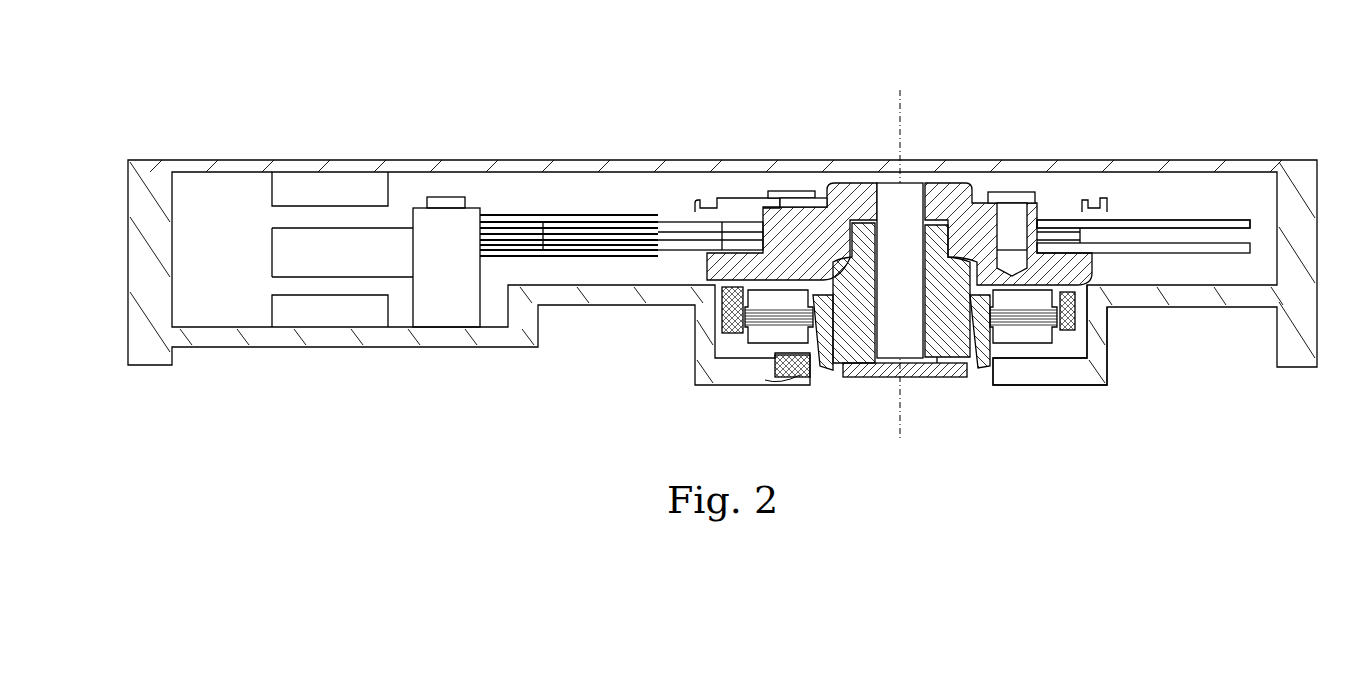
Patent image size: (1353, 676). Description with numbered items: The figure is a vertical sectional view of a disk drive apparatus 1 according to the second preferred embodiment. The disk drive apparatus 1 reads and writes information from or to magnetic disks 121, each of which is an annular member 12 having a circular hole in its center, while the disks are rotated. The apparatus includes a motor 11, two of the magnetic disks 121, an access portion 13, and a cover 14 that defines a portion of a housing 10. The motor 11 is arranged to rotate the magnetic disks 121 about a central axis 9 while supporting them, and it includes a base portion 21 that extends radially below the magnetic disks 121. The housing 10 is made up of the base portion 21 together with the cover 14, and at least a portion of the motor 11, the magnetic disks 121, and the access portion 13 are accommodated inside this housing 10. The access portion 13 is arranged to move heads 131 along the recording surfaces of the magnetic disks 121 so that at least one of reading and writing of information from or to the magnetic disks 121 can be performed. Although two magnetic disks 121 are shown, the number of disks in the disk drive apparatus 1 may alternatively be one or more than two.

The disk drive apparatus 1 is at (647, 128).
The central axis 9 is at (897, 128).
The housing 10 is at (235, 150).
The motor 11 is at (822, 190).
The annular member 12 is at (1178, 222).
The magnetic disk 121 is at (1143, 224).
The access portion 13 is at (507, 211).
The head 131 is at (610, 222).
The cover 14 is at (408, 165).
The base portion 21 is at (1153, 293).